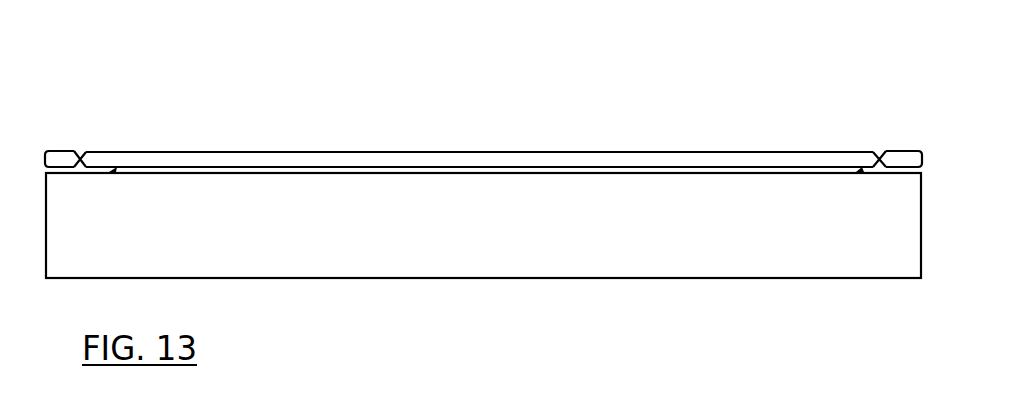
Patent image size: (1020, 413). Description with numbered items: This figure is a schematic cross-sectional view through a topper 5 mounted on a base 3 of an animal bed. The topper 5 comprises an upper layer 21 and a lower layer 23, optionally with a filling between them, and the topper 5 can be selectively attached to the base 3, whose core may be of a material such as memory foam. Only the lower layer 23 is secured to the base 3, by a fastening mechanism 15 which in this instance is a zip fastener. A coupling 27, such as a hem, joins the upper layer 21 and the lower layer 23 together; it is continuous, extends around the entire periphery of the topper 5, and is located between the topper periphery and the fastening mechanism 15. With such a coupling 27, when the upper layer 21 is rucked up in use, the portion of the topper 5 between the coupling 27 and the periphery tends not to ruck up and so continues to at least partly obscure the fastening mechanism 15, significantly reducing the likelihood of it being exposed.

The base 3 is at (630, 307).
The topper 5 is at (483, 96).
The fastening mechanism 15 is at (118, 165).
The upper layer 21 is at (468, 152).
The lower layer 23 is at (537, 165).
The coupling 27 is at (80, 158).